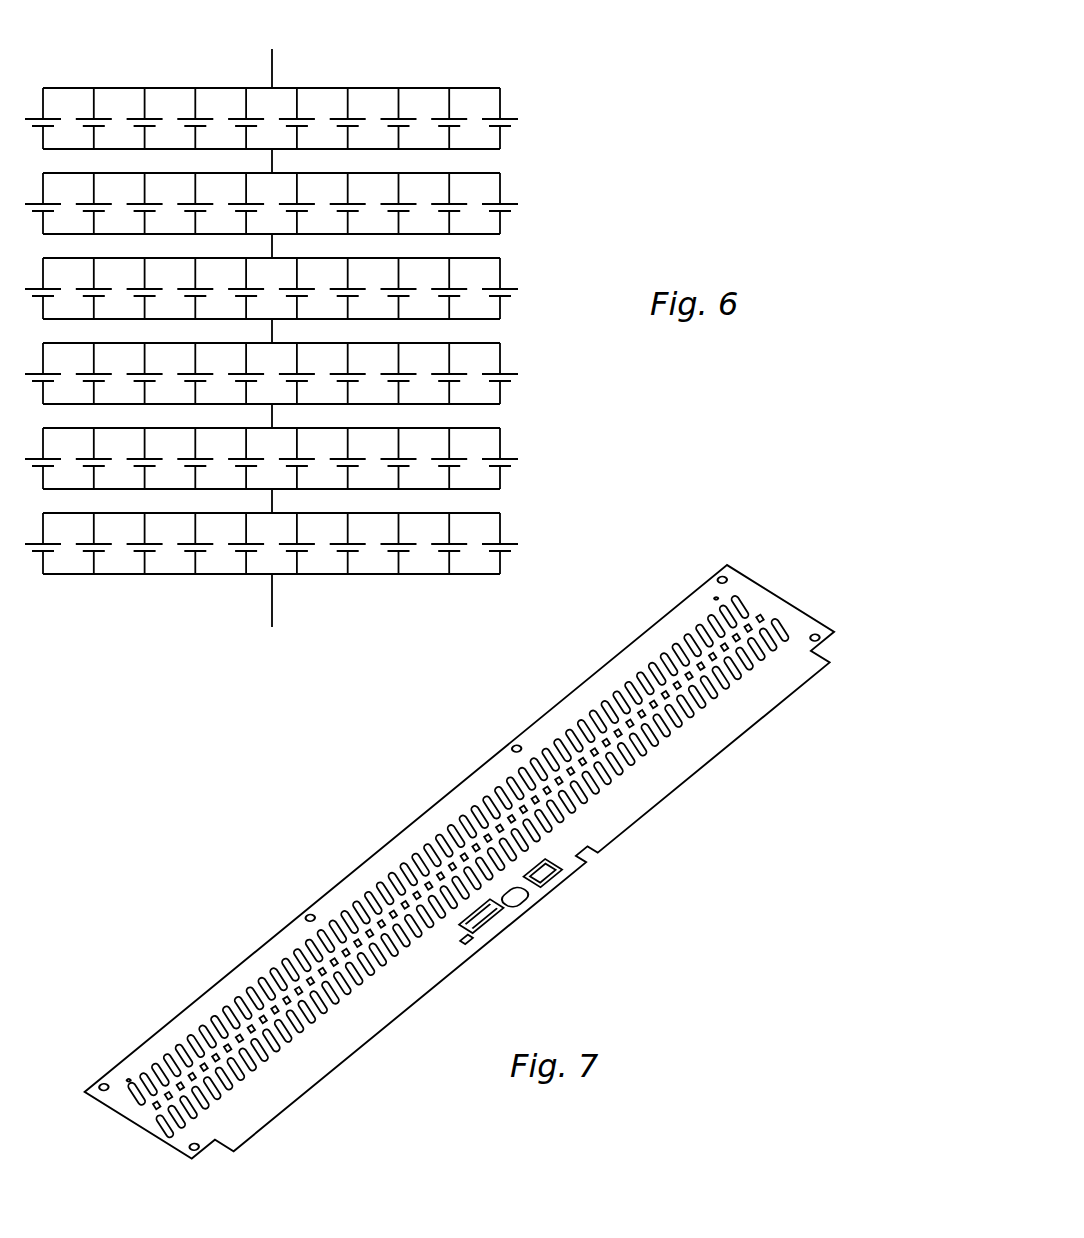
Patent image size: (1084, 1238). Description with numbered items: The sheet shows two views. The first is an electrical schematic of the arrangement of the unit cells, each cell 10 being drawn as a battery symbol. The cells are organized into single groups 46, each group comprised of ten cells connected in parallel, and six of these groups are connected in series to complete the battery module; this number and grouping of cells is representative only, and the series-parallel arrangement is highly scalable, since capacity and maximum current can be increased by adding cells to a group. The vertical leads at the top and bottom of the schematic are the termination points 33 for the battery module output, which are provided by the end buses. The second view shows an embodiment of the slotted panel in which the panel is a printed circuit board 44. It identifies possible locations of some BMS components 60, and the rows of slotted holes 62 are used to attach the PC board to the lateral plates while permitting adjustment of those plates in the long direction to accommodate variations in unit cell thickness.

In FIG. 6, the termination points 33 is at (328, 632).
In FIG. 6, the single group 46 is at (545, 82).
In FIG. 6, the battery cell 10 is at (508, 212).
In FIG. 7, the printed circuit board 44 is at (288, 1073).
In FIG. 7, the BMS components 60 is at (607, 919).
In FIG. 7, the slotted holes 62 is at (658, 740).